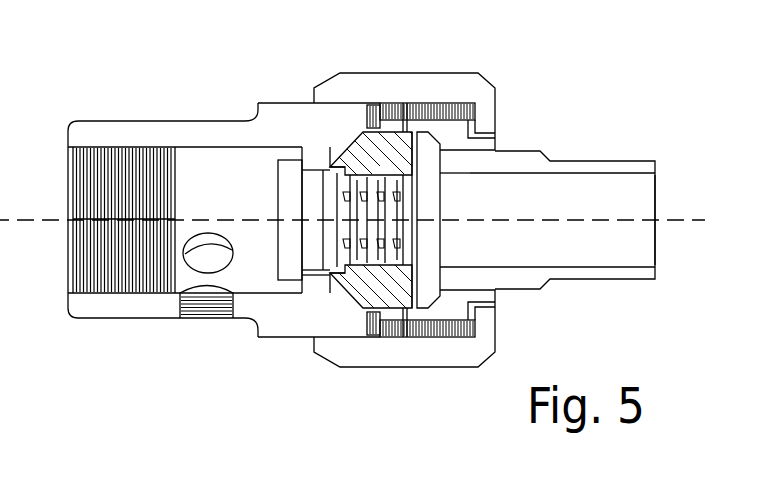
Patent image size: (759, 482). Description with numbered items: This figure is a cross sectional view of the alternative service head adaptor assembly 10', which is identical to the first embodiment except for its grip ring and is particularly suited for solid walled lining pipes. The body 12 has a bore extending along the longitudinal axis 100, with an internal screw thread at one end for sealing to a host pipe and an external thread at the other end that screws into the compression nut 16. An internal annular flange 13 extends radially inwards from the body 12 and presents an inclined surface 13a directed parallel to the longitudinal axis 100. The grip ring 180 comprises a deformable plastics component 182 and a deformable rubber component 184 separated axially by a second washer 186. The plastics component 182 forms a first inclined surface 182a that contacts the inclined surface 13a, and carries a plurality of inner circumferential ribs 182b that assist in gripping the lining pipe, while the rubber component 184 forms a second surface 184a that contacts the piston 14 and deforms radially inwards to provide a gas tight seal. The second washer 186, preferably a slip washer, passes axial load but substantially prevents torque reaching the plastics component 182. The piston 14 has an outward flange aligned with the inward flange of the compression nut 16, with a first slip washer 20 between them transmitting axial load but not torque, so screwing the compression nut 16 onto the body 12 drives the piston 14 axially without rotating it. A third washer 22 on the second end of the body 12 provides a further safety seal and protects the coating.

The adaptor assembly 10' is at (352, 149).
The body 12 is at (115, 120).
The internal annular flange 13 is at (314, 169).
The inclined surface 13a is at (322, 276).
The piston 14 is at (520, 290).
The compression nut 16 is at (481, 88).
The first slip washer 20 is at (480, 124).
The third washer 22 is at (361, 103).
The longitudinal axis 100 is at (663, 218).
The grip ring 180 is at (393, 299).
The plastics component 182 is at (356, 163).
The first inclined surface 182a is at (365, 282).
The inner circumferential ribs 182b is at (318, 165).
The rubber component 184 is at (428, 143).
The second surface 184a is at (442, 166).
The second washer 186 is at (396, 104).